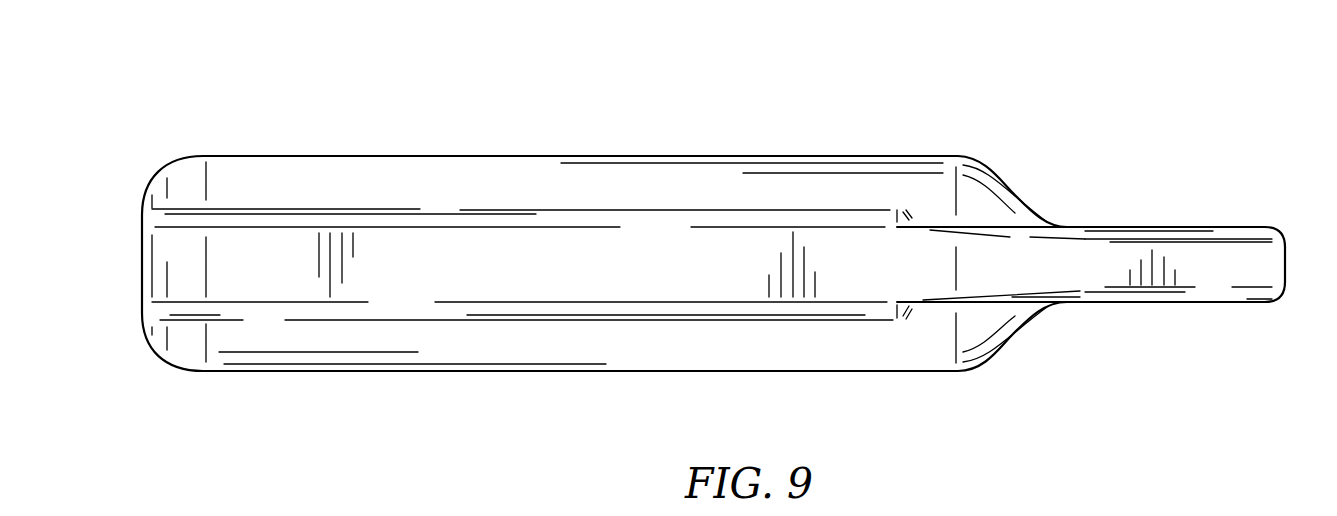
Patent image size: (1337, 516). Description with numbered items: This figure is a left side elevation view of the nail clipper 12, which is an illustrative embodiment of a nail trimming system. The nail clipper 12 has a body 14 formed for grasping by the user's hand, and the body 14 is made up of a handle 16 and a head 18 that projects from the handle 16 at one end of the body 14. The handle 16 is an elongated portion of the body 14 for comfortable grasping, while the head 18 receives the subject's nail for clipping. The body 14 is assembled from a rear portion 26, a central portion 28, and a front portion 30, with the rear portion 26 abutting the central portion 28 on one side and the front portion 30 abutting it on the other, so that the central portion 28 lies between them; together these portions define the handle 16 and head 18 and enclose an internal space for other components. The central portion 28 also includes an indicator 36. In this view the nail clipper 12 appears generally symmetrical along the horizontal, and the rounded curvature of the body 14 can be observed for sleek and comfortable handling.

The nail clipper 12 is at (832, 113).
The body 14 is at (732, 135).
The handle 16 is at (358, 155).
The head 18 is at (1023, 200).
The rear portion 26 is at (927, 375).
The central portion 28 is at (142, 273).
The front portion 30 is at (938, 157).
The indicator 36 is at (1272, 265).